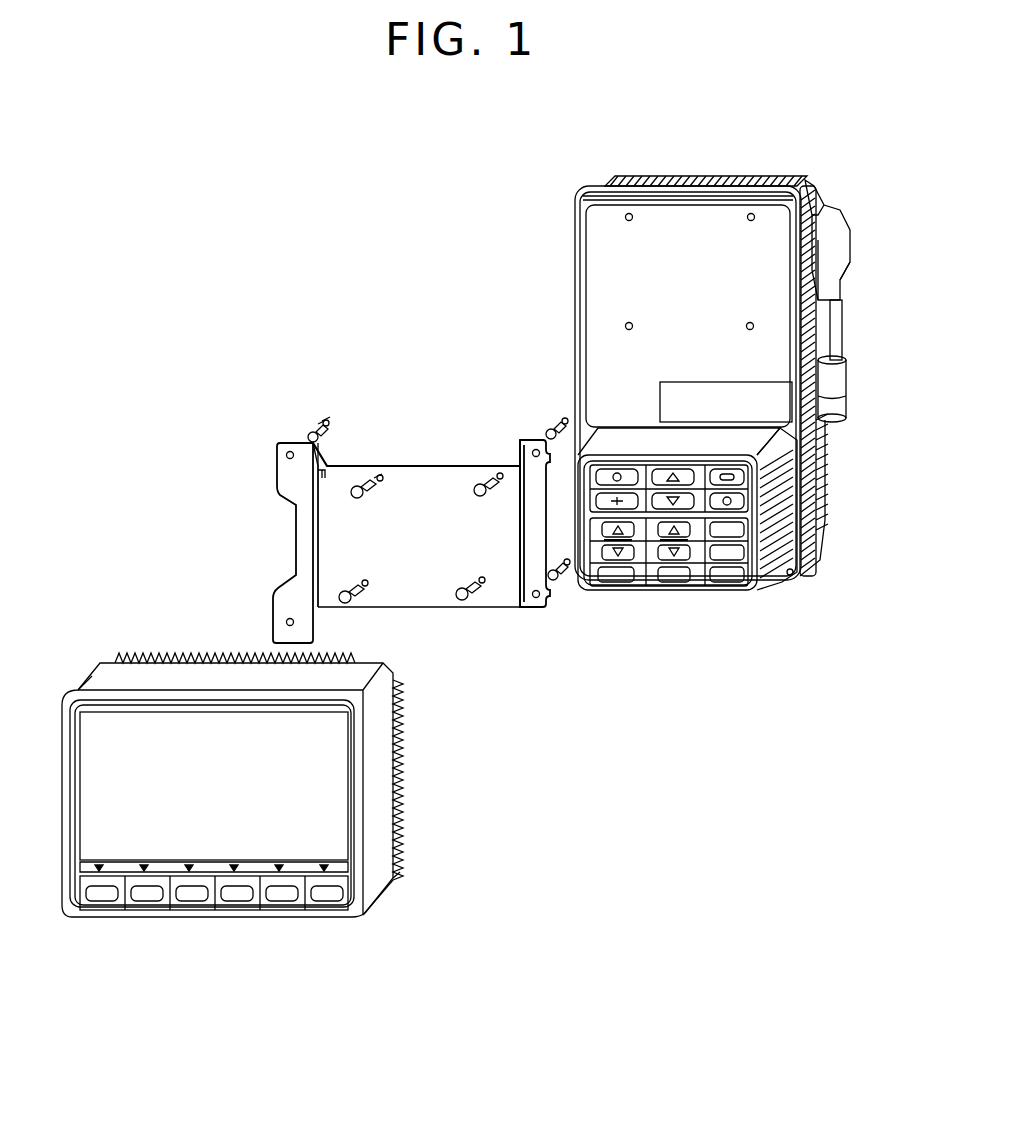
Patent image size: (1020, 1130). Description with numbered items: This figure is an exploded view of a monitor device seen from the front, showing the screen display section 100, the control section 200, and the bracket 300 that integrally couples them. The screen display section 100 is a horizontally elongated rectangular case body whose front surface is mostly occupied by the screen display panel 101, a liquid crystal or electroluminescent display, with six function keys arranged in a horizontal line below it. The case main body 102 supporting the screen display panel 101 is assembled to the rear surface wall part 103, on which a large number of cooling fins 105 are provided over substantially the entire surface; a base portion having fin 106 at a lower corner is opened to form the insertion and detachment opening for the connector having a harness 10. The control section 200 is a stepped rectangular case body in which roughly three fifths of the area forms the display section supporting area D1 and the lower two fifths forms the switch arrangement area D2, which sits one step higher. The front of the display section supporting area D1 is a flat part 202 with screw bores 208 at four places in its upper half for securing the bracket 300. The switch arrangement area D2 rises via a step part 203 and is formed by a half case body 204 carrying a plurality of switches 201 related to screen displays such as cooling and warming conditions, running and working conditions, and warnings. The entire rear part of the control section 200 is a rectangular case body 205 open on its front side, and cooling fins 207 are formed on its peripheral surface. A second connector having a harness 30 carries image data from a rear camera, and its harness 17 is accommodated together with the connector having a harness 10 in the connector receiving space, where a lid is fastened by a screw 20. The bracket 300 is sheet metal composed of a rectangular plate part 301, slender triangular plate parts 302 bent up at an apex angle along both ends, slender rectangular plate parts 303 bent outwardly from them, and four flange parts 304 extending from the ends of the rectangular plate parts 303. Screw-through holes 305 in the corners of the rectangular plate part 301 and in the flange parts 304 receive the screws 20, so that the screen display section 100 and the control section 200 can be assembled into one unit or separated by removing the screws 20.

The connector having a harness 10 is at (410, 762).
The harness 17 is at (838, 315).
The screw 20 is at (556, 428).
The second connector having a harness 30 is at (842, 340).
The screen display section 100 is at (123, 636).
The screen display panel 101 is at (266, 827).
The case main body 102 is at (372, 885).
The rear surface wall part 103 is at (405, 866).
The cooling fins 105 is at (197, 660).
The base portion having fin 106 is at (395, 887).
The control section 200 is at (827, 182).
The switches 201 is at (665, 580).
The flat part 202 is at (577, 245).
The step part 203 is at (828, 400).
The half case body 204 is at (720, 590).
The rectangular case body 205 is at (822, 522).
The cooling fins 207 is at (735, 178).
The screw bores 208 is at (752, 326).
The bracket 300 is at (270, 543).
The rectangular plate part 301 is at (413, 598).
The triangular plate parts 302 is at (327, 464).
The rectangular plate parts 303 is at (300, 498).
The flange parts 304 is at (296, 442).
The screw-through holes 305 is at (285, 453).
The display section supporting area D1 is at (704, 284).
The switch arrangement area D2 is at (614, 530).